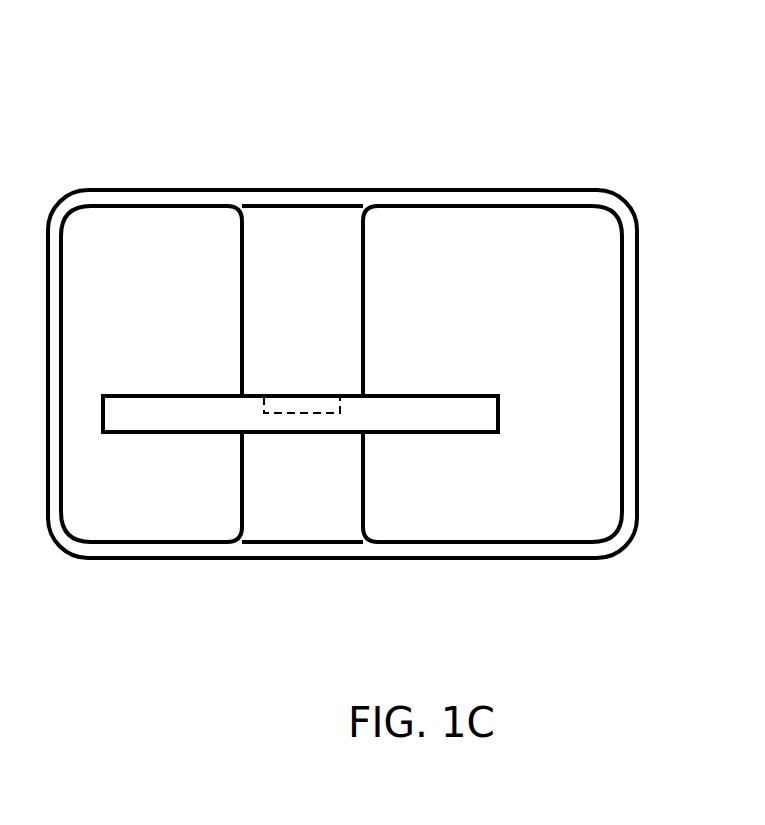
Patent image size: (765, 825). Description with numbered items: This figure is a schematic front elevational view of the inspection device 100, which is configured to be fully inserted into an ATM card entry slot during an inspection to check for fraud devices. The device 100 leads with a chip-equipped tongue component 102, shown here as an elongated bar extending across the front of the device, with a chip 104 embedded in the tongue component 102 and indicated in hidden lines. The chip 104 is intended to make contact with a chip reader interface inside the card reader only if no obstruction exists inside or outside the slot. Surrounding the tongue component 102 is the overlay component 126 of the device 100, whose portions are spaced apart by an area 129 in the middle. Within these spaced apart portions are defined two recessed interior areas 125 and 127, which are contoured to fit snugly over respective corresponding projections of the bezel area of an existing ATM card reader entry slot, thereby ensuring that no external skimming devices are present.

The device 100 is at (492, 126).
The tongue component 102 is at (462, 396).
The chip 104 is at (332, 402).
The recessed interior area 125 is at (140, 232).
The overlay component 126 is at (304, 176).
The recessed interior area 127 is at (601, 228).
The area 129 is at (296, 524).